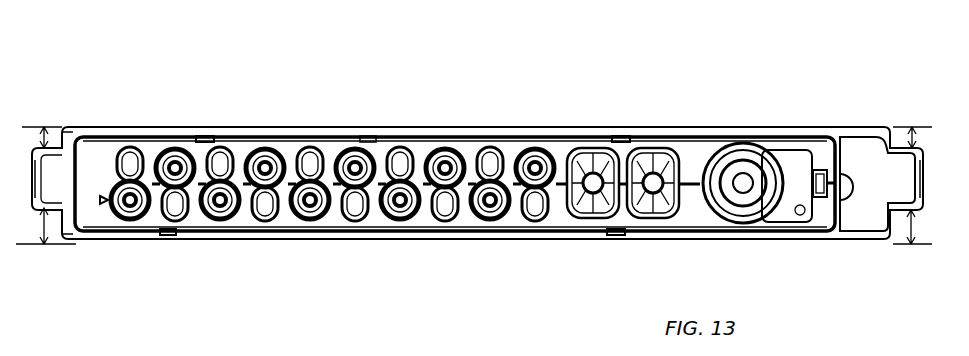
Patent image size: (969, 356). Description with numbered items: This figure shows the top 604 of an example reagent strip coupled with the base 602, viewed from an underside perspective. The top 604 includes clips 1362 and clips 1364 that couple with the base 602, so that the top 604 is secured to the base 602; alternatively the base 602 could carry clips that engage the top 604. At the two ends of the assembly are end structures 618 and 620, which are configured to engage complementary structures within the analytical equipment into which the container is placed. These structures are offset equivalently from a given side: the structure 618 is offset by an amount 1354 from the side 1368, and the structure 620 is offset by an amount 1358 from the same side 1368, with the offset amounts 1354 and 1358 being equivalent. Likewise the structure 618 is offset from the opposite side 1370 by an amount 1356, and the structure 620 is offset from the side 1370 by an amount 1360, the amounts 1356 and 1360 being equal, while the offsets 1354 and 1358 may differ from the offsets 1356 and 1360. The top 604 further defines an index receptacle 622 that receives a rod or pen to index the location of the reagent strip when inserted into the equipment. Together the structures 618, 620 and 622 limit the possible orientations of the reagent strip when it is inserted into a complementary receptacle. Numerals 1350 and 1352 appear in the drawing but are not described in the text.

The housing 1350 is at (60, 168).
The end compartment 1352 is at (872, 158).
The offset amount 1354 is at (46, 128).
The offset amount 1356 is at (52, 238).
The offset amount 1358 is at (910, 126).
The offset amount 1360 is at (910, 192).
The clips 1362 is at (203, 140).
The clips 1364 is at (817, 177).
The side 1368 is at (480, 138).
The side 1370 is at (454, 238).
The base 602 is at (373, 222).
The top 604 is at (368, 138).
The end structure 618 is at (40, 178).
The end structure 620 is at (898, 183).
The index receptacle 622 is at (842, 198).